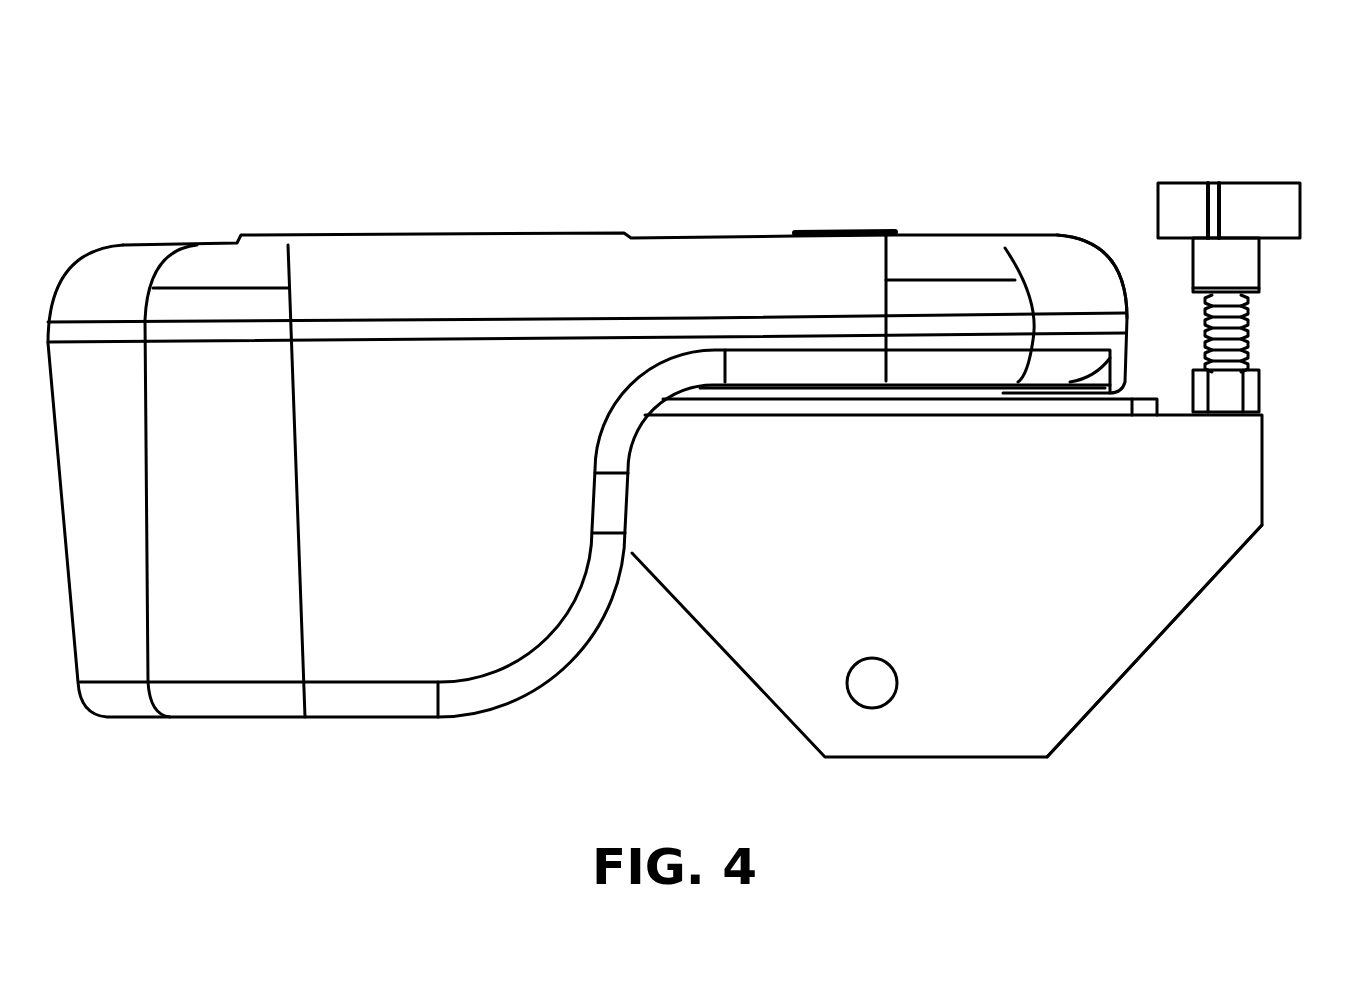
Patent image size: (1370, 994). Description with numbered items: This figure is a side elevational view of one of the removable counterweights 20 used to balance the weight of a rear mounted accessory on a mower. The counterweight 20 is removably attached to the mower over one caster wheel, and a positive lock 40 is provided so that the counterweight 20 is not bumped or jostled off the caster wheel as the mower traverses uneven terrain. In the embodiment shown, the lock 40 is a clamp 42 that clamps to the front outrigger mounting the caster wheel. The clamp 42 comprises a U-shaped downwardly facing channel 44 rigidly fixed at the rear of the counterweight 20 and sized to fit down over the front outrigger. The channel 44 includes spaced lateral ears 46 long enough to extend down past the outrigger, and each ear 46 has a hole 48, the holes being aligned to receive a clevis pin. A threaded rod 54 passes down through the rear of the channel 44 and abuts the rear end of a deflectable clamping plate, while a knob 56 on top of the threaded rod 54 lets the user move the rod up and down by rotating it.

The counterweight 20 is at (498, 410).
The lock 40 is at (1261, 241).
The clamp 42 is at (1157, 455).
The channel 44 is at (918, 403).
The lateral ears 46 is at (987, 665).
The hole 48 is at (876, 660).
The threaded rod 54 is at (1249, 342).
The knob 56 is at (1275, 207).